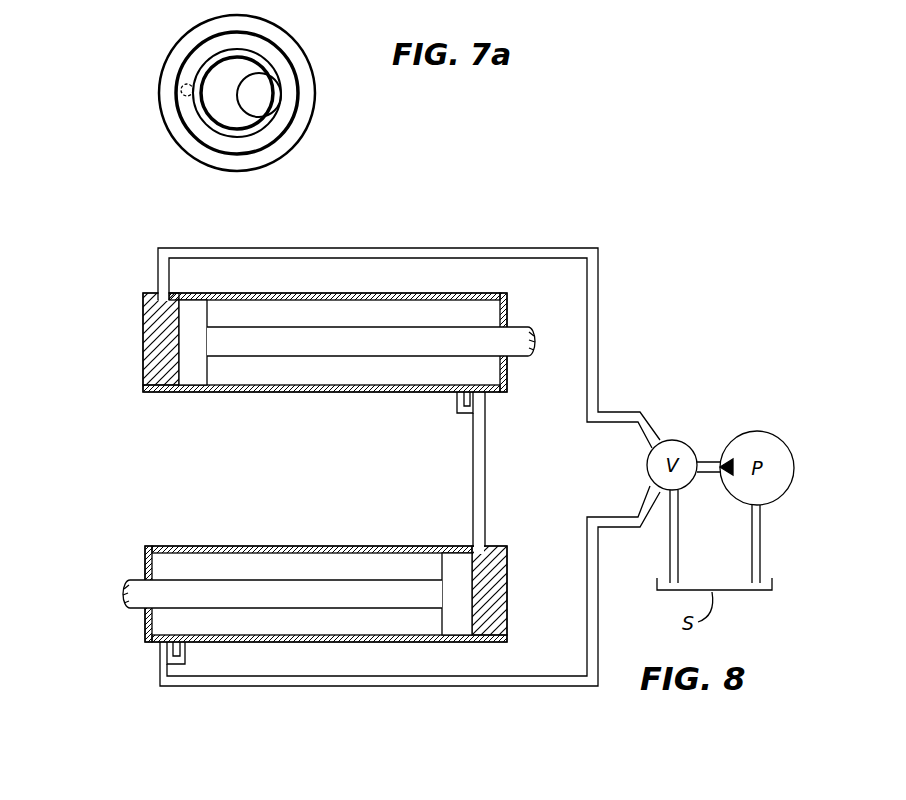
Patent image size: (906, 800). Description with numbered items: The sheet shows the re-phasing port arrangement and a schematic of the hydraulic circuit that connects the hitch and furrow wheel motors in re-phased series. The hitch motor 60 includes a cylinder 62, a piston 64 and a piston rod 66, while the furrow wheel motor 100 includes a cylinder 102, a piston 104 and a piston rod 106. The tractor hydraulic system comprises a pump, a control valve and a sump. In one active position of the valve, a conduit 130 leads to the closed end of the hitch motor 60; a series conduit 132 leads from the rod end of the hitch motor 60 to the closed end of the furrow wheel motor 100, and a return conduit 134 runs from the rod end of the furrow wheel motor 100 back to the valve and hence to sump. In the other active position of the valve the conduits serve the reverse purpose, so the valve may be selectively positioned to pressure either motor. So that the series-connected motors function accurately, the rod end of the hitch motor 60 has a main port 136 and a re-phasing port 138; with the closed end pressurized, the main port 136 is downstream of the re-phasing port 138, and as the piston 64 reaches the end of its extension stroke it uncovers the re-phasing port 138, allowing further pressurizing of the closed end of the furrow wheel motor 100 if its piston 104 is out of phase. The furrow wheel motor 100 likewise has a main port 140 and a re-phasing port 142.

In FIG. 8, the hitch motor 60 is at (345, 366).
In FIG. 8, the cylinder 62 is at (265, 392).
In FIG. 8, the piston 64 is at (192, 363).
In FIG. 8, the piston rod 66 is at (523, 333).
In FIG. 8, the furrow wheel motor 100 is at (285, 564).
In FIG. 8, the cylinder 102 is at (222, 543).
In FIG. 8, the piston 104 is at (462, 565).
In FIG. 8, the piston rod 106 is at (132, 603).
In FIG. 8, the conduit 130 is at (599, 247).
In FIG. 8, the series conduit 132 is at (487, 475).
In FIG. 8, the lower hydraulic line 134 is at (488, 687).
In FIG. 7A, the main port 136 is at (270, 77).
In FIG. 8, the main port 136 is at (487, 398).
In FIG. 7A, the re-phasing port 138 is at (184, 80).
In FIG. 8, the re-phasing port 138 is at (455, 398).
In FIG. 8, the main port 140 is at (158, 658).
In FIG. 8, the re-phasing port 142 is at (187, 652).